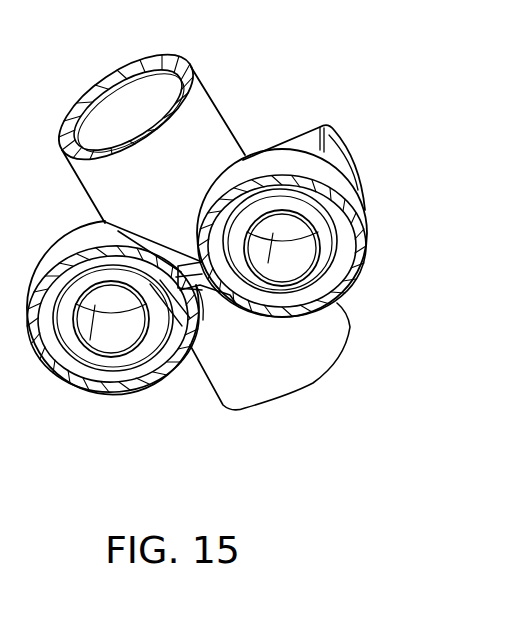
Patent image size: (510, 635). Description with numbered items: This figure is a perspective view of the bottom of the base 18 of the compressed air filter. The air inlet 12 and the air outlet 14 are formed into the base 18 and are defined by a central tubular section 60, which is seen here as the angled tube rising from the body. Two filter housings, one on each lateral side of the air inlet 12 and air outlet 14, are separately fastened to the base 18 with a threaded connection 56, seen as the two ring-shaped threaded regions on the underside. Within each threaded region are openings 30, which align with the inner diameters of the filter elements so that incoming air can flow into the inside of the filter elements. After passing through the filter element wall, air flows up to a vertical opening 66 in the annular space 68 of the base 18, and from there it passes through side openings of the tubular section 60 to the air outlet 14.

The air inlet 12 is at (102, 96).
The air outlet 14 is at (275, 404).
The base 18 is at (274, 98).
The openings 30 is at (76, 328).
The threaded connection 56 is at (98, 393).
The tubular section 60 is at (240, 128).
The vertical opening 66 is at (187, 348).
The annular space 68 is at (252, 158).